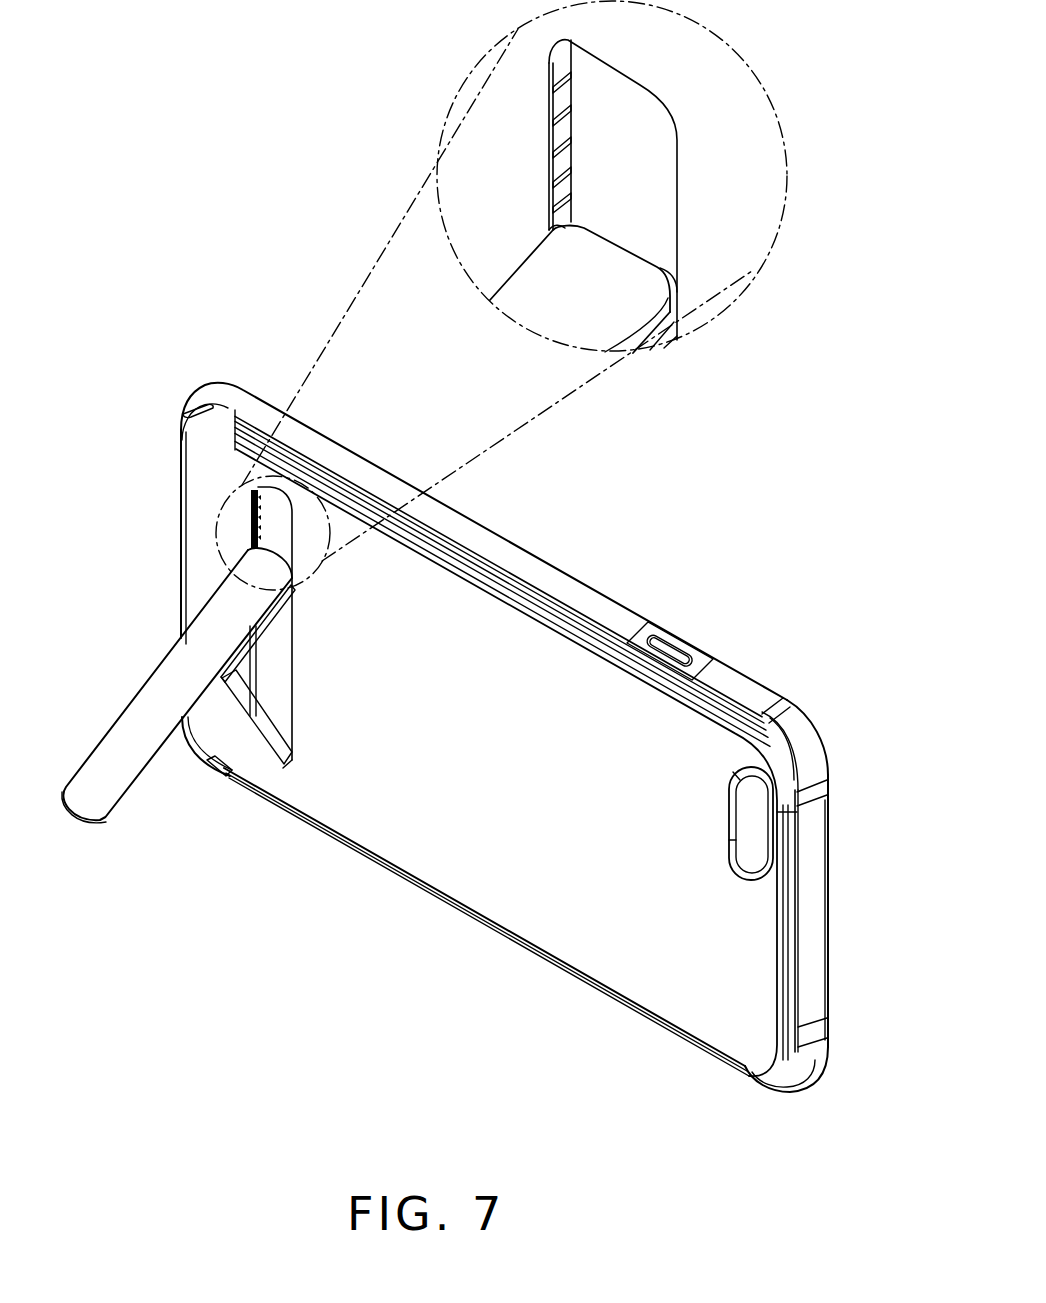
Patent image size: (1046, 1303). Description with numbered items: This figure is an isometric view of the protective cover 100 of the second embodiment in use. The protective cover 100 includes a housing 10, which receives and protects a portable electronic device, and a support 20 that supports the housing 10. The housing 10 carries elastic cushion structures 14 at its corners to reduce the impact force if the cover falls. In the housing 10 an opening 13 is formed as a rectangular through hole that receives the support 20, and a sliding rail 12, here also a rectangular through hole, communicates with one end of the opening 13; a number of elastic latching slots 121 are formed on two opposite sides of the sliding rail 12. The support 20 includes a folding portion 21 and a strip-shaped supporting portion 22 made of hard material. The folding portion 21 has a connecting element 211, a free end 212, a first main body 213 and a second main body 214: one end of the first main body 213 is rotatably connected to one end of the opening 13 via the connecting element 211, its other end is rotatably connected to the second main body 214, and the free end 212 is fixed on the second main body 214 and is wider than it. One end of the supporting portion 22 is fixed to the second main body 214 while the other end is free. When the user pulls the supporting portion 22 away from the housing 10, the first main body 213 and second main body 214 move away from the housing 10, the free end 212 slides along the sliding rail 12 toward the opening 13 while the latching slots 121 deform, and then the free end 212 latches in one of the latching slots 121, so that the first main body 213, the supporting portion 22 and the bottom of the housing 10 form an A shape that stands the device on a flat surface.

The protective cover 100 is at (207, 287).
The housing 10 is at (452, 860).
The sliding rail 12 is at (254, 490).
The latching slots 121 is at (250, 530).
The opening 13 is at (275, 697).
The cushion structure 14 is at (800, 736).
The support 20 is at (78, 551).
The folding portion 21 is at (123, 514).
The connecting element 211 is at (272, 758).
The free end 212 is at (258, 582).
The first main body 213 is at (233, 640).
The second main body 214 is at (262, 598).
The supporting portion 22 is at (170, 690).